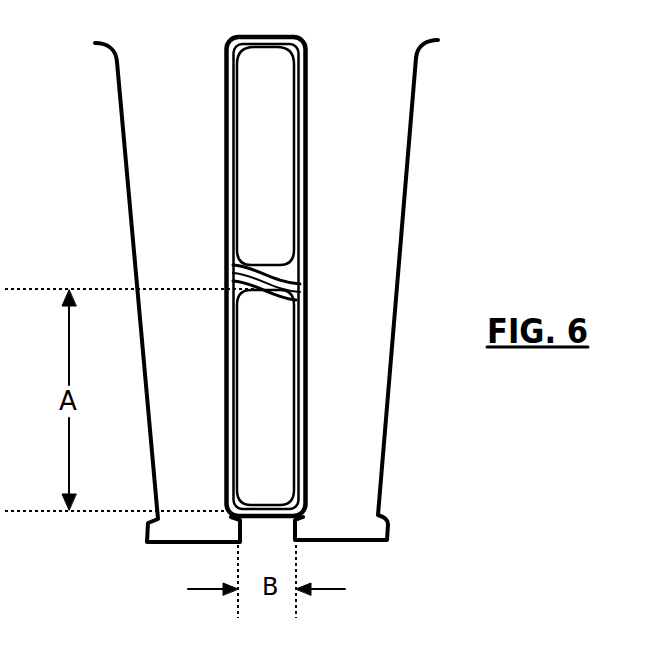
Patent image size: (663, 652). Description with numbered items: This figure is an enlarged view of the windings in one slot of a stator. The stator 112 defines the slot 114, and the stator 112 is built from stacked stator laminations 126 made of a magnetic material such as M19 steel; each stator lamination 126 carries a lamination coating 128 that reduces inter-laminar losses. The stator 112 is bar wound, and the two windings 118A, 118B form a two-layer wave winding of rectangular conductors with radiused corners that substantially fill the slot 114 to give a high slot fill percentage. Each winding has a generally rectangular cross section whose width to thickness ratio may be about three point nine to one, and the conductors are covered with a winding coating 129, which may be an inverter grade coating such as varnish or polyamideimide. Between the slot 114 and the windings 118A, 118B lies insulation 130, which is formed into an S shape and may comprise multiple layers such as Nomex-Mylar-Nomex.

The stator 112 is at (410, 130).
The slot 114 is at (272, 529).
The winding 118A is at (253, 80).
The winding 118B is at (263, 425).
The stator lamination 126 is at (157, 155).
The lamination coating 128 is at (187, 218).
The winding coating 129 is at (285, 206).
The insulation 130 is at (303, 262).